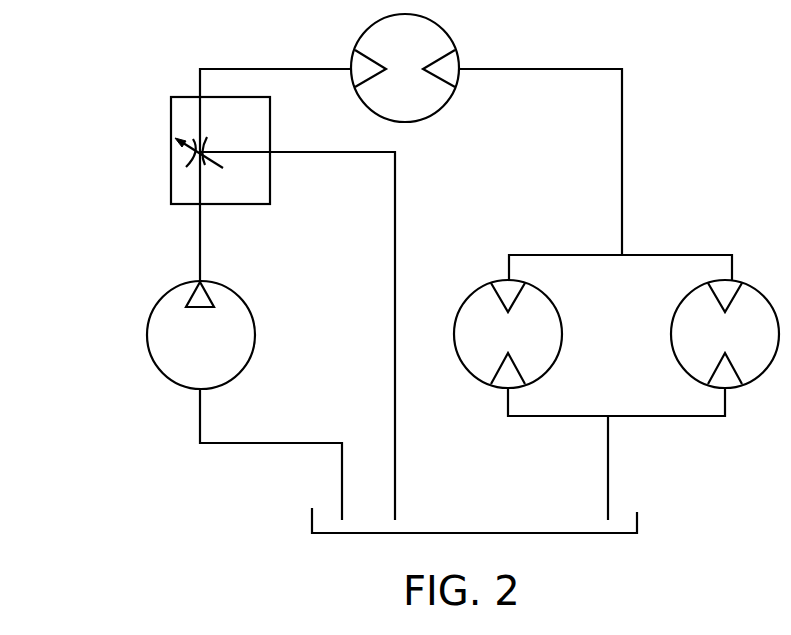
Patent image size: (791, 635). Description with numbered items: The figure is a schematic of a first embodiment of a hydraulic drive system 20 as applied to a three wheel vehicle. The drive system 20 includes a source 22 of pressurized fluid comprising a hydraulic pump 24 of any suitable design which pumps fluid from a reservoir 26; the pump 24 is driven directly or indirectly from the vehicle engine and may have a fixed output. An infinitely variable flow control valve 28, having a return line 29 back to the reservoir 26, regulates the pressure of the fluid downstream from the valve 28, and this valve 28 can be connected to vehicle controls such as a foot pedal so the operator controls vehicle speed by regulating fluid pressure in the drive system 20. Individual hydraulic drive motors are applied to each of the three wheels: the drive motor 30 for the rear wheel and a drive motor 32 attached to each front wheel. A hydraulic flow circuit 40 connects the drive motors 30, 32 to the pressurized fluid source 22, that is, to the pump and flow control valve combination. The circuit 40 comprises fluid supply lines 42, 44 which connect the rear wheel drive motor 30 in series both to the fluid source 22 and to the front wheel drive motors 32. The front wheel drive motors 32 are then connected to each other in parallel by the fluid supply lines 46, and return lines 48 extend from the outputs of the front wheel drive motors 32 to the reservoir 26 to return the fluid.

The hydraulic drive system 20 is at (697, 96).
The source of pressurized fluid 22 is at (128, 166).
The hydraulic pump 24 is at (150, 321).
The reservoir 26 is at (310, 520).
The flow control valve 28 is at (171, 108).
The return line 29 is at (397, 193).
The drive motor 30 is at (373, 25).
The drive motors 32 is at (543, 291).
The hydraulic flow circuit 40 is at (534, 56).
The fluid supply line 42 is at (257, 69).
The fluid supply line 44 is at (583, 69).
The fluid supply lines 46 is at (546, 255).
The return lines 48 is at (547, 417).